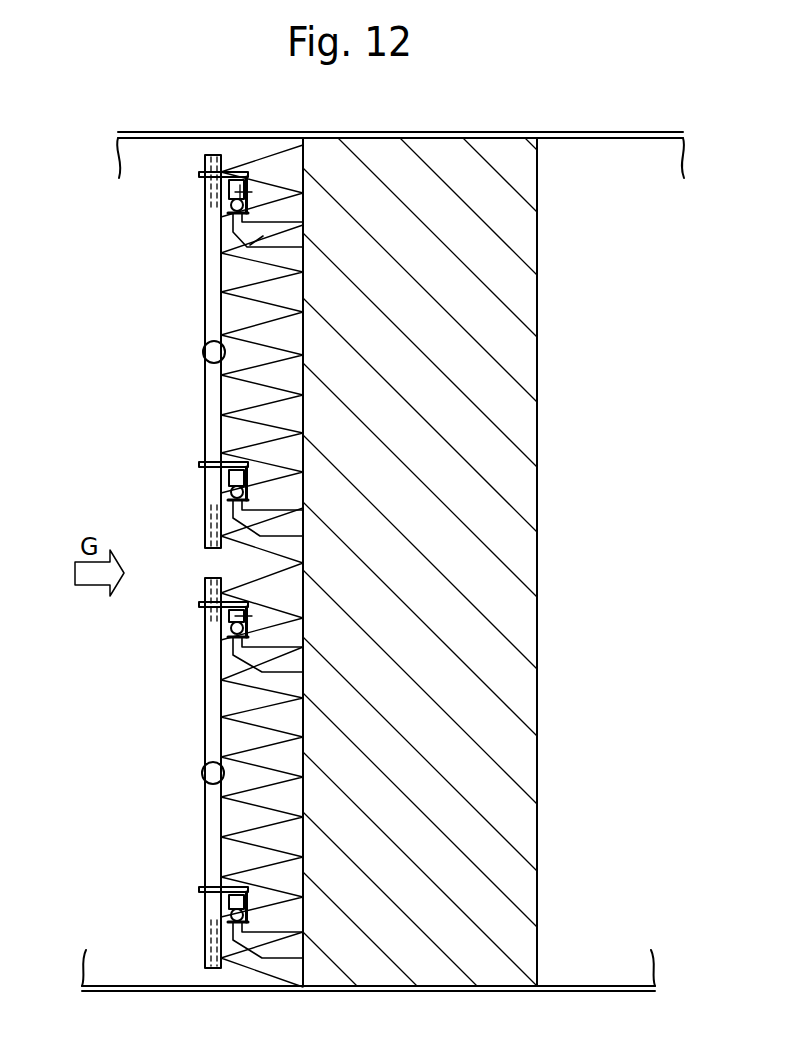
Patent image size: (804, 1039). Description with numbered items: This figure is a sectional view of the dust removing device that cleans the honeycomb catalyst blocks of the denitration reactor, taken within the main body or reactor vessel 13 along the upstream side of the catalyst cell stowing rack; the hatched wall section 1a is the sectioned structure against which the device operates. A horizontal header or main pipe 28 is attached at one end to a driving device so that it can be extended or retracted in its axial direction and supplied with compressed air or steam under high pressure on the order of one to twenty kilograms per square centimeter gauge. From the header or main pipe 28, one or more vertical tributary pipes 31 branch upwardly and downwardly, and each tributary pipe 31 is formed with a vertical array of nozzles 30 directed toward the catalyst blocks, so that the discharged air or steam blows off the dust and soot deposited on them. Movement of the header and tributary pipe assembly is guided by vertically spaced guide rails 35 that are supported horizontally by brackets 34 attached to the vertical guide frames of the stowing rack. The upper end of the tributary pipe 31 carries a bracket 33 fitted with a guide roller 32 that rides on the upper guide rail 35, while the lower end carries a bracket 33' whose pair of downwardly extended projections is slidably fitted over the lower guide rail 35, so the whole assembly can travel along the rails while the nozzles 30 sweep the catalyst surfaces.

The main body or reactor vessel 13 is at (580, 130).
The hatched body 1a is at (503, 333).
The vertical tributary pipe 31 is at (212, 325).
The nozzle 30 is at (222, 538).
The horizontal header or main pipe 28 is at (209, 356).
The guide roller 32 is at (200, 174).
The bracket 33 is at (281, 497).
The bracket 33' is at (192, 456).
The guide rail 35 is at (232, 208).
The bracket 34 is at (256, 240).